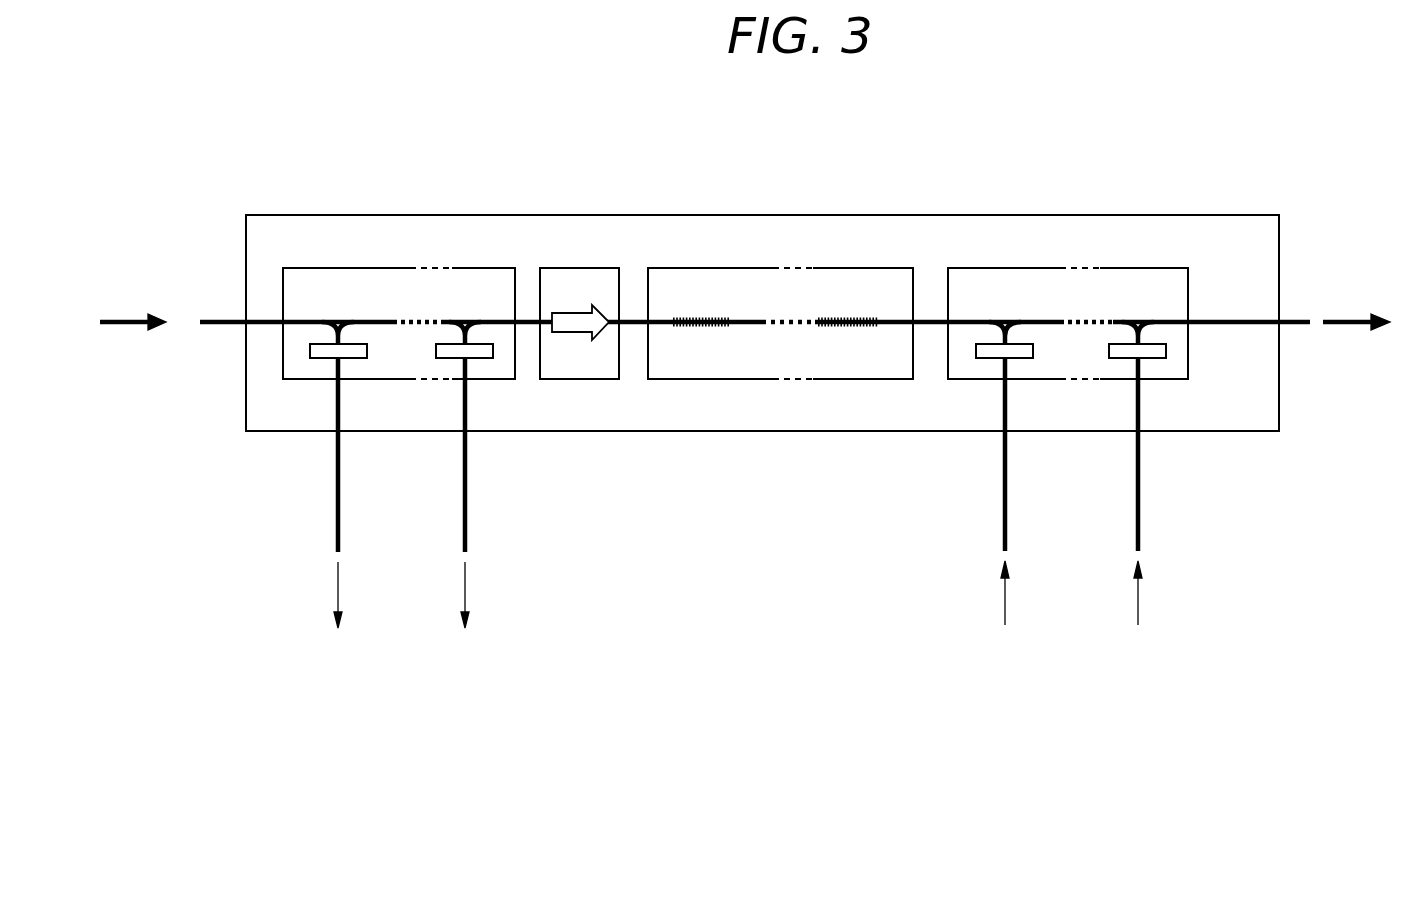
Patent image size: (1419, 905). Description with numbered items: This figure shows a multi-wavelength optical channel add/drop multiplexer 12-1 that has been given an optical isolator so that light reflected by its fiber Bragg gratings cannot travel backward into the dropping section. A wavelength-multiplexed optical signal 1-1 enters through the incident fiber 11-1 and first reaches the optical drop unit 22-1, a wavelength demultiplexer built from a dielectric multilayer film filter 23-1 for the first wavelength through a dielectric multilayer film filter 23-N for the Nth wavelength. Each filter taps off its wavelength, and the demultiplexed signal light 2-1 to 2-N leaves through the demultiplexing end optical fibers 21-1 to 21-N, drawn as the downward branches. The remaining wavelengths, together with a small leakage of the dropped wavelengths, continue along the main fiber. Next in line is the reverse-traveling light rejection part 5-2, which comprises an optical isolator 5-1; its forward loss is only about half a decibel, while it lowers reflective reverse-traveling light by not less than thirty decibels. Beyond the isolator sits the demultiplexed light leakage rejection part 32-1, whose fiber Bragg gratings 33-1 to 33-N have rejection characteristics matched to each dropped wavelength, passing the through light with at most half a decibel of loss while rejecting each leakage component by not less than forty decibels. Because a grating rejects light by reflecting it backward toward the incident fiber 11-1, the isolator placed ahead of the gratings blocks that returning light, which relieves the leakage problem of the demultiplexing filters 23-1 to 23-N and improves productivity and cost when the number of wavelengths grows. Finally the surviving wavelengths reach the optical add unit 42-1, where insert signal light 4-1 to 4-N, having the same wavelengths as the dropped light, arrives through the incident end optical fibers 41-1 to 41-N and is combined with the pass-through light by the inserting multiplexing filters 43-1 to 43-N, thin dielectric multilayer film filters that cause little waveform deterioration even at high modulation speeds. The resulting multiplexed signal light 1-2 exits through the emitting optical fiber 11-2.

The optical signal 1-1 is at (112, 320).
The multiplexed signal light 1-2 is at (1343, 318).
The incident fiber 11-1 is at (215, 325).
The emitting optical fiber 11-2 is at (1293, 318).
The optical channel add/drop multiplexer 12-1 is at (758, 432).
The optical drop unit 22-1 is at (307, 382).
The dielectric multilayer film filter 23-1 is at (353, 343).
The dielectric multilayer film filter 23-N is at (478, 343).
The demultiplexing end optical fiber 21-1 is at (337, 495).
The demultiplexing end optical fiber 21-N is at (463, 482).
The signal light 2-1 is at (337, 583).
The signal light 2-N is at (464, 577).
The optical isolator 5-1 is at (577, 312).
The reverse-traveling light rejection part 5-2 is at (563, 380).
The demultiplexed light leakage rejection part 32-1 is at (687, 380).
The fiber bragg grating 33-1 is at (705, 313).
The fiber bragg grating 33-N is at (857, 313).
The optical add unit 42-1 is at (980, 380).
The inserting multiplexing filter 43-1 is at (1018, 342).
The inserting multiplexing filter 43-N is at (1155, 342).
The incident end optical fiber 41-1 is at (1003, 510).
The incident end optical fiber 41-N is at (1137, 478).
The insert signal light 4-1 is at (1003, 593).
The insert signal light 4-N is at (1137, 595).